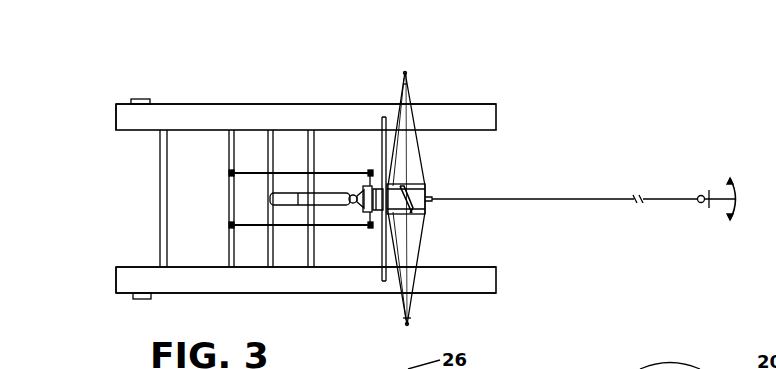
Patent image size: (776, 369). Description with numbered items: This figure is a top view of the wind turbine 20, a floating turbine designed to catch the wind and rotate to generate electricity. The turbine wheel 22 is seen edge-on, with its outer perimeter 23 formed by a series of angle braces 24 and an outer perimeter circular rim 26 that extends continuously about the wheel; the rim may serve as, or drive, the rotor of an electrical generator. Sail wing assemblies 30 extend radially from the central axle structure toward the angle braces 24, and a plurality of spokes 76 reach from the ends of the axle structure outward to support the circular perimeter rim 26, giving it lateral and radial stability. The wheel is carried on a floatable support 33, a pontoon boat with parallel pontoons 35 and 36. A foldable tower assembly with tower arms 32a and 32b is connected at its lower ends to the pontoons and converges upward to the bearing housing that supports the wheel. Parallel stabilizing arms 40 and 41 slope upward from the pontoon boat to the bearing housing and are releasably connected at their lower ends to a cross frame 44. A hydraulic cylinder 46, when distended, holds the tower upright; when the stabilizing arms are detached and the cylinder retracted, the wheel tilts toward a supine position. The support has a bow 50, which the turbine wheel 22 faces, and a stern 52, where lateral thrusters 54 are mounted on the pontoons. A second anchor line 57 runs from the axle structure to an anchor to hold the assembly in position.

The wind turbine 20 is at (284, 97).
The turbine wheel 22 is at (421, 187).
The outer perimeter 23 is at (407, 71).
The angle braces 24 is at (411, 323).
The outer perimeter circular rim 26 is at (405, 70).
The sail wing assemblies 30 is at (409, 153).
The tower arm 32a is at (383, 236).
The tower arm 32b is at (382, 150).
The floatable support 33 is at (288, 295).
The pontoon 35 is at (360, 110).
The pontoon 36 is at (370, 293).
The stabilizing arm 40 is at (264, 160).
The stabilizing arm 41 is at (262, 226).
The cross frame 44 is at (230, 199).
The hydraulic cylinder 46 is at (338, 205).
The bow 50 is at (497, 117).
The stern 52 is at (116, 118).
The lateral thrusters 54 is at (140, 99).
The second anchor line 57 is at (592, 197).
The spokes 76 is at (423, 238).